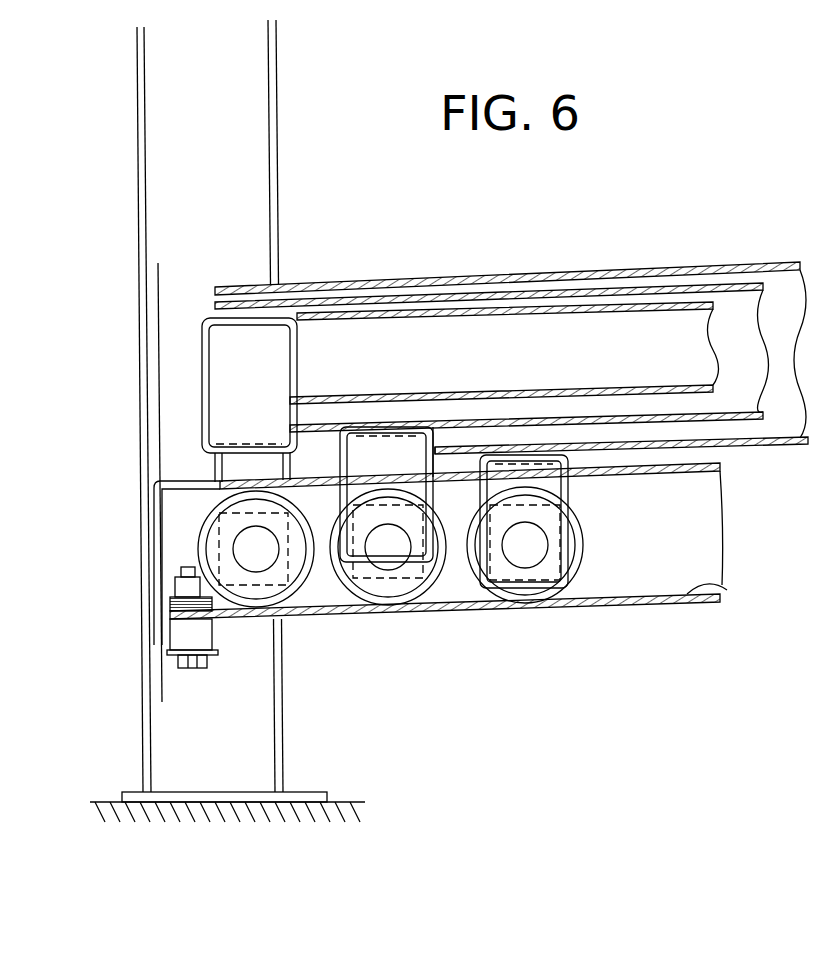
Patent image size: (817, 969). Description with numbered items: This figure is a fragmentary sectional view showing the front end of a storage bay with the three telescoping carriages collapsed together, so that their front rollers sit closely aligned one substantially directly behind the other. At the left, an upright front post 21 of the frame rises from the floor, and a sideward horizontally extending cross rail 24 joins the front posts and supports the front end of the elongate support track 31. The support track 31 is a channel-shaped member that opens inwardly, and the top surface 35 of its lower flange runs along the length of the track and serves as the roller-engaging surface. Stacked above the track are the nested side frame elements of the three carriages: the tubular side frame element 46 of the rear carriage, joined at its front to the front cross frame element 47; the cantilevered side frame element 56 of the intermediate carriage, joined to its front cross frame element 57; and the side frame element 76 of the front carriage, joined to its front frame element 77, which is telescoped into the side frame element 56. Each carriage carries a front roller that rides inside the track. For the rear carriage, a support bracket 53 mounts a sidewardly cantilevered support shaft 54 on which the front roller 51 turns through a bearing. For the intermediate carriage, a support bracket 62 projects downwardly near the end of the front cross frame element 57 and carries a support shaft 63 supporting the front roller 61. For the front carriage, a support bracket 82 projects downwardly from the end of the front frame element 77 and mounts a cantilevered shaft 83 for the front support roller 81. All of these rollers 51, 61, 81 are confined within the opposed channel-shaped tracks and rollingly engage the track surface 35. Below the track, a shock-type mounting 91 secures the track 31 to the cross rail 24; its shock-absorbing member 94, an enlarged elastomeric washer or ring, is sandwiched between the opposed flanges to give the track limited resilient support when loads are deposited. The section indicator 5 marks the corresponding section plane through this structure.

The section line 5- 5 is at (158, 263).
The front post 21 is at (258, 147).
The cross rail 24 is at (152, 588).
The support track 31 is at (481, 557).
The top surface 35 is at (727, 592).
The side frame element 46 is at (515, 332).
The front cross frame element 47 is at (567, 455).
The front roller 51 is at (553, 590).
The support bracket 53 is at (582, 490).
The support shaft 54 is at (538, 548).
The side frame element 56 is at (732, 312).
The front cross frame element 57 is at (437, 443).
The front roller 61 is at (430, 588).
The support bracket 62 is at (390, 447).
The support shaft 63 is at (390, 550).
The side frame element 76 is at (658, 332).
The front frame element 77 is at (205, 410).
The front support roller 81 is at (275, 593).
The support bracket 82 is at (215, 456).
The cantilevered shaft 83 is at (237, 547).
The shock-type mounting 91 is at (180, 637).
The shock-absorbing member 94 is at (174, 645).